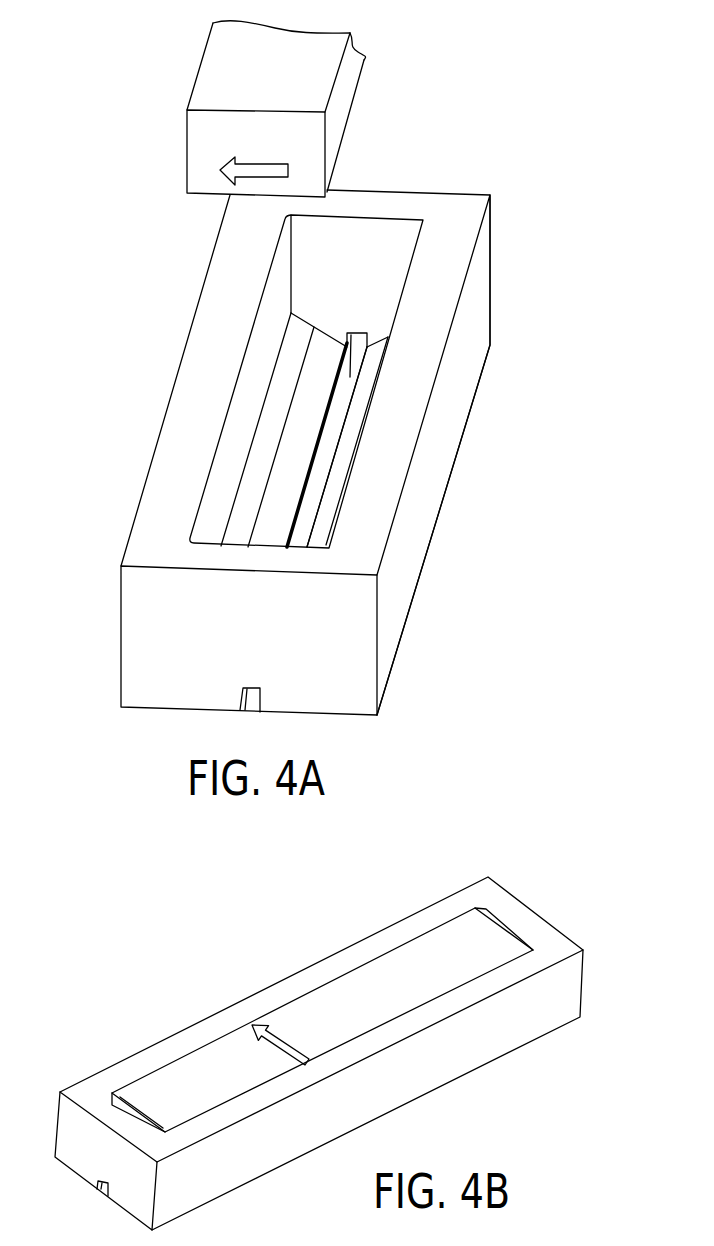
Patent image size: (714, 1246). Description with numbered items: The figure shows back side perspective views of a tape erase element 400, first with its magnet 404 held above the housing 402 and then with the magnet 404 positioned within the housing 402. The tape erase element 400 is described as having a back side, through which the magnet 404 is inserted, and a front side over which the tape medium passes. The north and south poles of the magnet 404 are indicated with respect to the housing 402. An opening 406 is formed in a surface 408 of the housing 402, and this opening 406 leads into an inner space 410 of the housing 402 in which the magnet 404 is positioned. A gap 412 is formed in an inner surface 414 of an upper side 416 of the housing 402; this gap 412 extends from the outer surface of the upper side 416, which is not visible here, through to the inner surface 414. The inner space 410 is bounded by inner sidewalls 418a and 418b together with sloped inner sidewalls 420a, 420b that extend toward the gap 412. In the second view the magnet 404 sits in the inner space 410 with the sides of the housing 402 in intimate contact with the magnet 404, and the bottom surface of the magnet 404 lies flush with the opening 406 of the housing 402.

In FIG. 4A, the tape erase element 400 is at (474, 170).
In FIG. 4A, the housing 402 is at (408, 190).
In FIG. 4B, the housing 402 is at (348, 962).
In FIG. 4A, the magnet 404 is at (347, 93).
In FIG. 4B, the magnet 404 is at (235, 1055).
In FIG. 4A, the opening 406 is at (273, 262).
In FIG. 4B, the opening 406 is at (135, 1105).
In FIG. 4A, the surface 408 is at (218, 355).
In FIG. 4A, the inner space 410 is at (277, 333).
In FIG. 4A, the gap 412 is at (358, 333).
In FIG. 4A, the inner surface 414 is at (284, 509).
In FIG. 4A, the upper side 416 is at (470, 398).
In FIG. 4A, the inner sidewall 418a is at (249, 410).
In FIG. 4A, the inner sidewall 418b is at (338, 504).
In FIG. 4A, the sloped inner sidewall 420a is at (323, 360).
In FIG. 4A, the sloped inner sidewall 420b is at (346, 456).